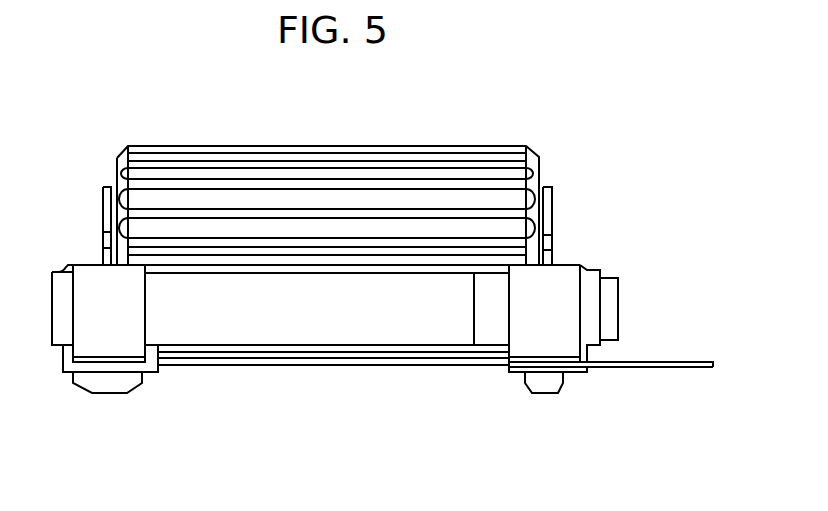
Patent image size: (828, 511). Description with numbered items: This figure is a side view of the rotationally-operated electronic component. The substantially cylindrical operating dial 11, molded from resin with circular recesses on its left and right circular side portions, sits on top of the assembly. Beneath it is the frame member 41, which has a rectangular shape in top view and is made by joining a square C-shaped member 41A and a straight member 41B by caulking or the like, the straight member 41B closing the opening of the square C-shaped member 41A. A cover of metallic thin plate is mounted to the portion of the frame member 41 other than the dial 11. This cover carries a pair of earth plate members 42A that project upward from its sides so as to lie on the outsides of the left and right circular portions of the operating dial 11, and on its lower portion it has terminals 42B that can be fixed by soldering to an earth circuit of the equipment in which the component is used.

The operating dial 11 is at (347, 177).
The frame member 41 is at (319, 380).
The square C-shaped member 41A is at (332, 327).
The straight member 41B is at (493, 332).
The earth plate members 42A is at (108, 208).
The terminals 42B is at (110, 363).